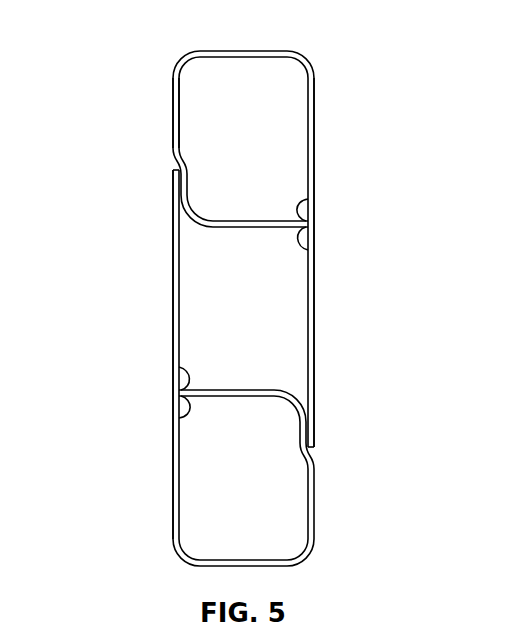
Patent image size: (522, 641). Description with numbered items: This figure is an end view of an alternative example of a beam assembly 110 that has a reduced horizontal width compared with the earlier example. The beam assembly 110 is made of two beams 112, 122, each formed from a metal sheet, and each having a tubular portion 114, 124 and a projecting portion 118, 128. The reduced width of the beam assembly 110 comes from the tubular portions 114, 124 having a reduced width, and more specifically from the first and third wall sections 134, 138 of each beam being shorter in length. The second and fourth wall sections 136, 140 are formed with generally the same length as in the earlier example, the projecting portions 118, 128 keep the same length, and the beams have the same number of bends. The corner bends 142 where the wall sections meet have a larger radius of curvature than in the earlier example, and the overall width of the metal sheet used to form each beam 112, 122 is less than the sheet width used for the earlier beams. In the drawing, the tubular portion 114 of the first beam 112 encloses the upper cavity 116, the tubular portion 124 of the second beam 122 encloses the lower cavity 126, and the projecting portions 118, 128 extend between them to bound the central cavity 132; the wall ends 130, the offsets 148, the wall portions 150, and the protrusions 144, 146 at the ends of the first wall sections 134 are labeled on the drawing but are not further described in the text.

The beam assembly 110 is at (122, 72).
The beam 112 is at (299, 45).
The tubular portion 114 is at (191, 43).
The first compartment 116 is at (229, 132).
The projecting portion 118 is at (315, 335).
The beam 122 is at (192, 573).
The tubular portion 124 is at (288, 573).
The second compartment 126 is at (229, 474).
The projecting portion 128 is at (172, 290).
The side wall end 130 is at (169, 190).
The middle compartment 132 is at (229, 302).
The first wall section 134 is at (246, 219).
The second wall section 136 is at (172, 116).
The third wall section 138 is at (241, 51).
The fourth wall section 140 is at (313, 154).
The corner bend 142 is at (296, 67).
The first protrusion 144 is at (304, 203).
The second protrusion 146 is at (298, 251).
The wall offset 148 is at (170, 160).
The outer wall portion 150 is at (172, 86).